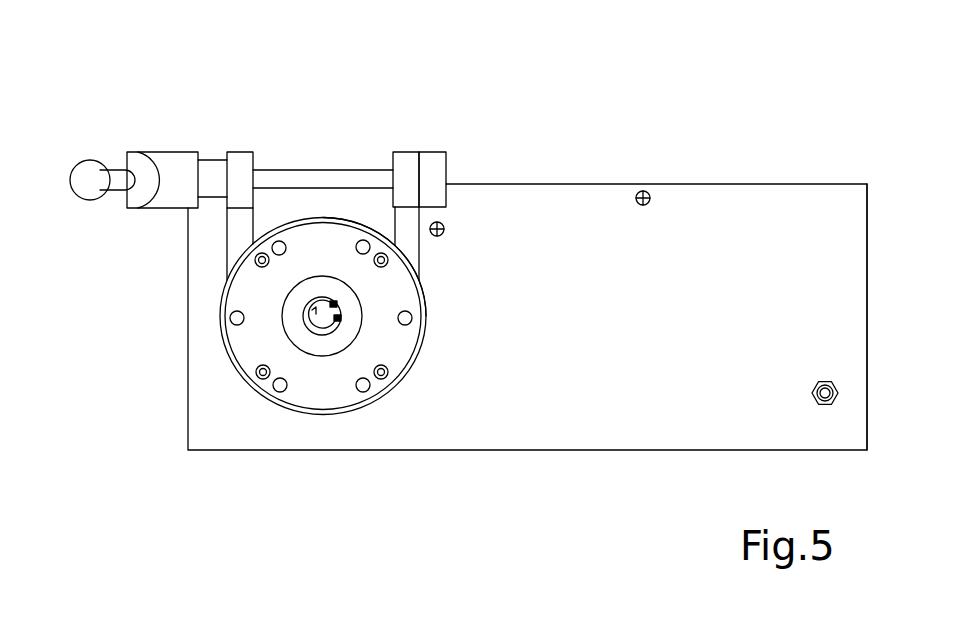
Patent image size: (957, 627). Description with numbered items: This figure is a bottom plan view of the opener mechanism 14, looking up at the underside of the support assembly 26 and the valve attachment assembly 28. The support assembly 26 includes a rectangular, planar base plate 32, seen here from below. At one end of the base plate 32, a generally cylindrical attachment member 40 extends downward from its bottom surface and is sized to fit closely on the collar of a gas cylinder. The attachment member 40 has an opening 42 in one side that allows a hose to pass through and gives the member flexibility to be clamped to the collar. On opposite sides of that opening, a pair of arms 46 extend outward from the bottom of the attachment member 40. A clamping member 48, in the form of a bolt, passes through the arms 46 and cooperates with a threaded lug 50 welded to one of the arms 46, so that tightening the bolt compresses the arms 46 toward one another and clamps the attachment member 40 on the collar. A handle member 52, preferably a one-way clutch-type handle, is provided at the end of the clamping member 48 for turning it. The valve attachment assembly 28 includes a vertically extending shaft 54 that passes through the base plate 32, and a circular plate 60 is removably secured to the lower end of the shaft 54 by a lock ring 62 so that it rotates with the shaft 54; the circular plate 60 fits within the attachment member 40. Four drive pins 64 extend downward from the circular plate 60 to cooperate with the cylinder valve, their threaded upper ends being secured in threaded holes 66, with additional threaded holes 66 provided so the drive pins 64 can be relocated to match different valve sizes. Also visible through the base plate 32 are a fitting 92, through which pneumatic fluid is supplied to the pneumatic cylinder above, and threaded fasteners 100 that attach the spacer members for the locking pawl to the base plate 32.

The opener mechanism 14 is at (140, 84).
The support assembly 26 is at (600, 186).
The valve attachment assembly 28 is at (225, 318).
The base plate 32 is at (792, 205).
The attachment member 40 is at (392, 396).
The opening 42 is at (377, 250).
The arms 46 is at (240, 152).
The clamping member 48 is at (283, 170).
The threaded lug 50 is at (430, 152).
The handle member 52 is at (173, 155).
The shaft 54 is at (328, 332).
The circular plate 60 is at (407, 337).
The lock ring 62 is at (308, 327).
The drive pins 64 is at (258, 266).
The threaded holes 66 is at (284, 243).
The fitting 92 is at (815, 406).
The threaded fasteners 100 is at (441, 224).